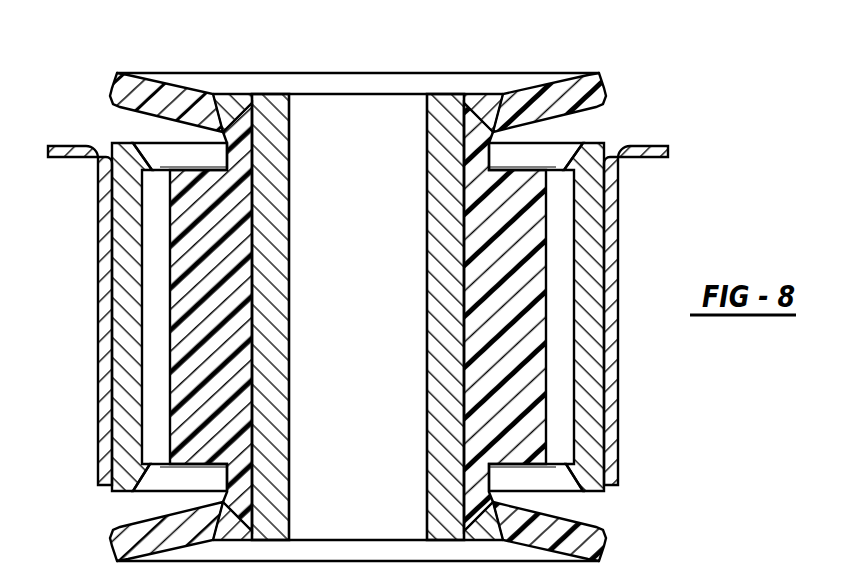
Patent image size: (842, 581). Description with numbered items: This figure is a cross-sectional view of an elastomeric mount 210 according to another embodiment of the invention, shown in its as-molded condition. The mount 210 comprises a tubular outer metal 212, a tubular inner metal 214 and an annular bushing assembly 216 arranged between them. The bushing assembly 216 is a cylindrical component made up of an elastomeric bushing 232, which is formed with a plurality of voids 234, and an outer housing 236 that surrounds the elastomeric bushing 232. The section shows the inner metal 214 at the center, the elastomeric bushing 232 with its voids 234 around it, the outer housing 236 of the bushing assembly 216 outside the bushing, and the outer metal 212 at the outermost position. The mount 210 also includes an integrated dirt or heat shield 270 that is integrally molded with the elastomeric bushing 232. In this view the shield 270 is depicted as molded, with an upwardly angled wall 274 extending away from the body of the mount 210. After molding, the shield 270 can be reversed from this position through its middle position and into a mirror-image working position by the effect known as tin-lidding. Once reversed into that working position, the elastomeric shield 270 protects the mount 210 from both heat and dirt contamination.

The elastomeric mount 210 is at (656, 88).
The tubular outer metal 212 is at (617, 400).
The tubular inner metal 214 is at (265, 427).
The annular bushing assembly 216 is at (216, 287).
The elastomeric bushing 232 is at (218, 335).
The voids 234 is at (155, 370).
The outer housing 236 is at (120, 287).
The integrated dirt or heat shield 270 is at (198, 94).
The upwardly angled wall 274 is at (557, 88).